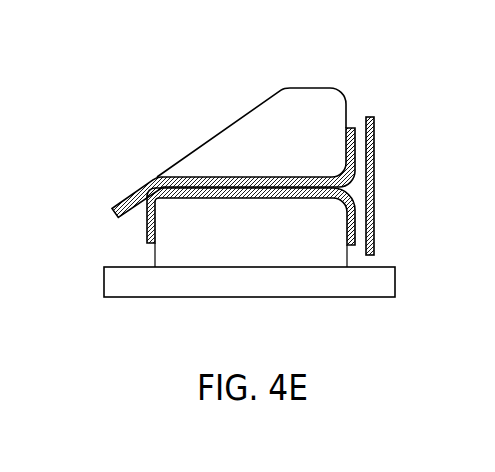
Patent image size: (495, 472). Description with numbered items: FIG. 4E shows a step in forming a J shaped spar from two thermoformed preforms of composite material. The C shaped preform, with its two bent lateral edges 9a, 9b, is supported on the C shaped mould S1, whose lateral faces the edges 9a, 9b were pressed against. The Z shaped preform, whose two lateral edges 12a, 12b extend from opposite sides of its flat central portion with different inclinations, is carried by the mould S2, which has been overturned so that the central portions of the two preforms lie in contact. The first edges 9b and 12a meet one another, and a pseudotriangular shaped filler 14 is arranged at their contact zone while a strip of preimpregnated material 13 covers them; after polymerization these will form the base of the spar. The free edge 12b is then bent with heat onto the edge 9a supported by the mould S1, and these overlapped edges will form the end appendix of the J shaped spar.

The bent lateral edge 9a is at (144, 231).
The bent lateral edge 9b is at (360, 217).
The lateral edge 12a is at (352, 126).
The free edge 12b is at (128, 188).
The strip of preimpregnated material 13 is at (375, 187).
The pseudotriangular shaped filler 14 is at (359, 176).
The C shaped mould S1 is at (327, 252).
The mould S2 is at (243, 138).